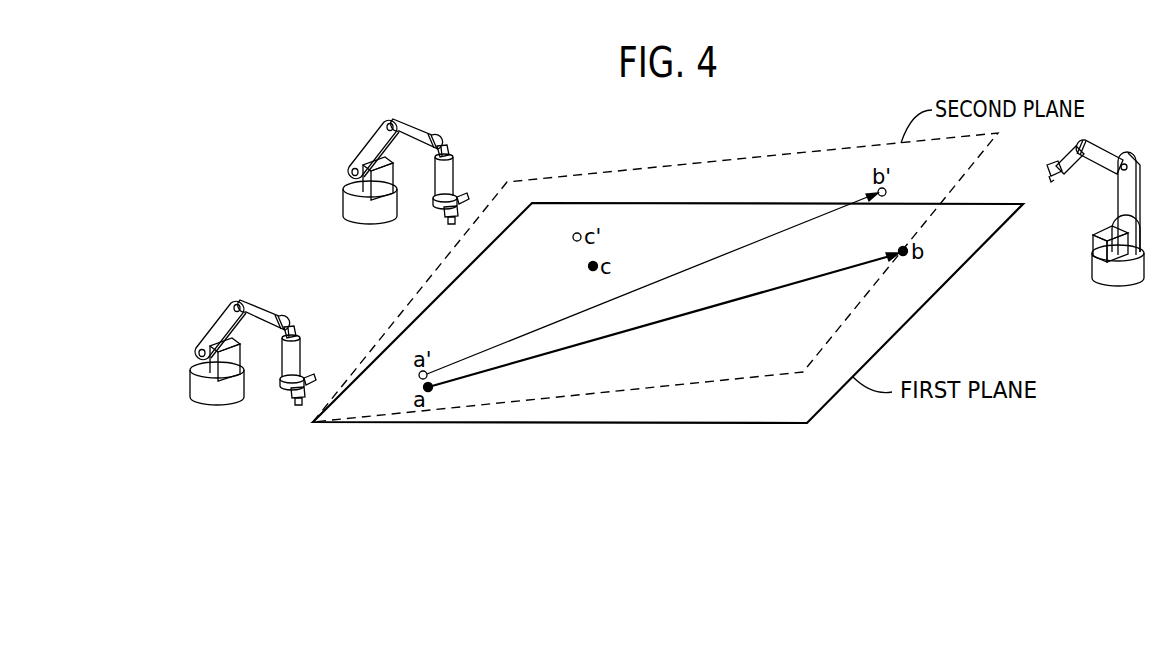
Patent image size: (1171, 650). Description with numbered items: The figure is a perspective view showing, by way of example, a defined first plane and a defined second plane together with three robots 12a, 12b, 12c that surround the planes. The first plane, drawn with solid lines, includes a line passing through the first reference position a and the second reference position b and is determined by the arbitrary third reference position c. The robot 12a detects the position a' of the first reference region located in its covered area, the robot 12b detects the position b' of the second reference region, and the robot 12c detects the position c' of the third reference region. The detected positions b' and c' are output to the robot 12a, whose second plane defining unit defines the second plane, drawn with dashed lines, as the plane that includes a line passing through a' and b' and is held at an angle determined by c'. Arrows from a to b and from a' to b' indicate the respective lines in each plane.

The robot 12a is at (225, 395).
The robot 12b is at (1125, 277).
The robot 12c is at (368, 203).